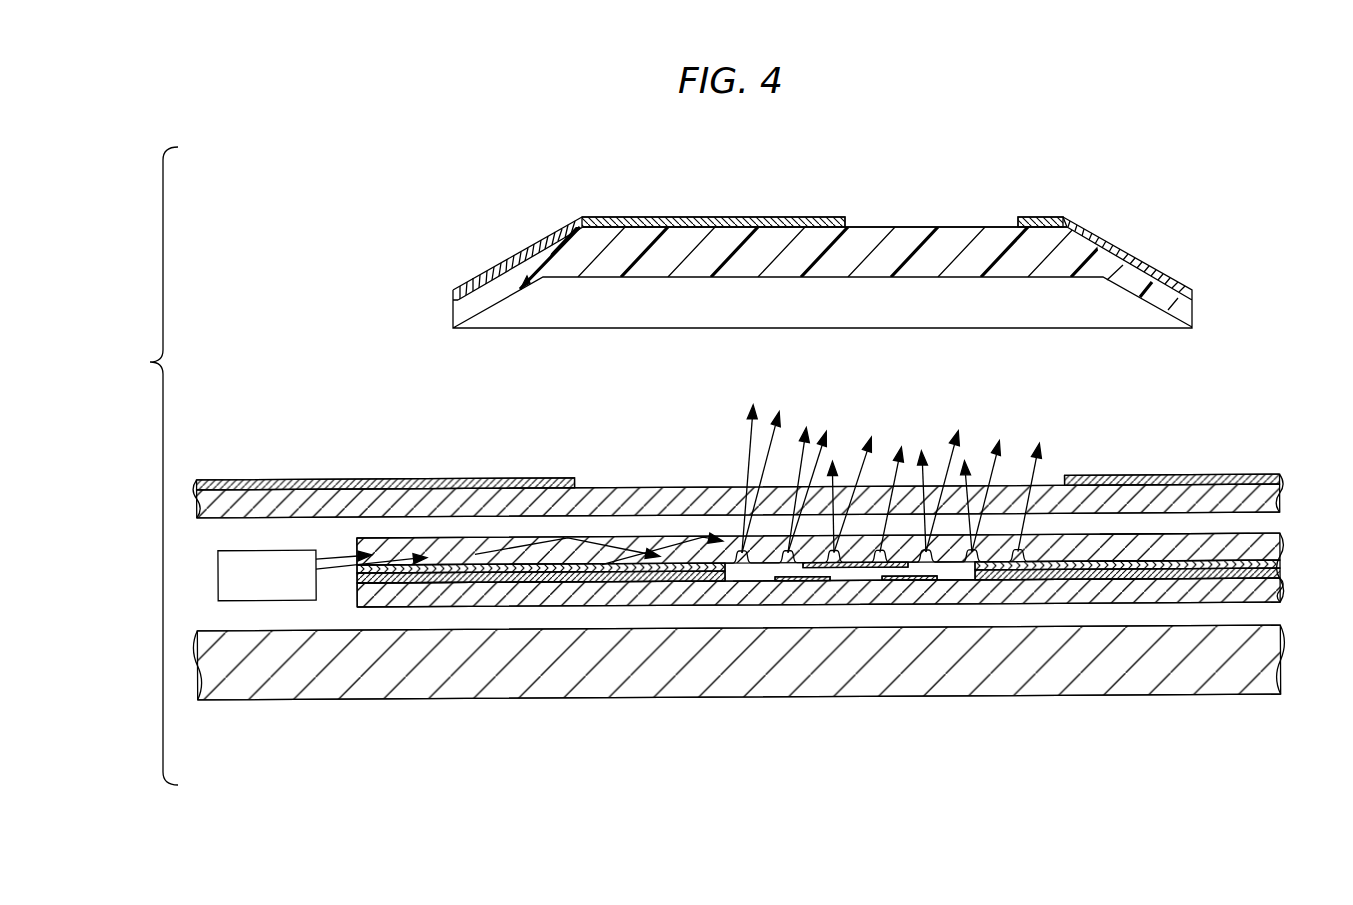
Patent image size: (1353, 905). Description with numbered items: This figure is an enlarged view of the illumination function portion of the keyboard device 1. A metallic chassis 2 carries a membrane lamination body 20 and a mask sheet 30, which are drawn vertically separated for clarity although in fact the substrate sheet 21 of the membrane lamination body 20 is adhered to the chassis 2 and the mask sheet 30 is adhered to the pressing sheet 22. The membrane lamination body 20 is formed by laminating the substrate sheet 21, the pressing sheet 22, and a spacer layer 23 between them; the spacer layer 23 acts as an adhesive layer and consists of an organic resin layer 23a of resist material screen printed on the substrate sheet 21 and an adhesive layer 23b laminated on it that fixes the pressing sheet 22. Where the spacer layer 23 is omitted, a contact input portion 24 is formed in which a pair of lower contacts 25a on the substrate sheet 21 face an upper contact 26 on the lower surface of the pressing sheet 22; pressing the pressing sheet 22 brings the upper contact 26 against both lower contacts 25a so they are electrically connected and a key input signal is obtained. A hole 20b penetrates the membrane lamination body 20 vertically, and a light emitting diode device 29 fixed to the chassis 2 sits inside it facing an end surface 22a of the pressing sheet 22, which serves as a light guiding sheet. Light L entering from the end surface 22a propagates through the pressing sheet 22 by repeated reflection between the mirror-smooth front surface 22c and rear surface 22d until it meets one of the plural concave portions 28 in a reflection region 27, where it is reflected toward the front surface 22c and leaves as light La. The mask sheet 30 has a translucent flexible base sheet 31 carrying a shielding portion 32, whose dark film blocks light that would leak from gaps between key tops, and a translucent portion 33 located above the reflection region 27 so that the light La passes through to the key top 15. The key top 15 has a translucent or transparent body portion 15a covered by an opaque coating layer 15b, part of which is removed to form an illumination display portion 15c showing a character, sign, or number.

The keyboard device 1 is at (1243, 292).
The chassis 2 is at (437, 683).
The key top 15 is at (652, 268).
The body portion 15a is at (970, 258).
The coating layer 15b is at (730, 216).
The illumination display portion 15c is at (918, 213).
The membrane lamination body 20 is at (1285, 536).
The hole 20b is at (353, 600).
The substrate sheet 21 is at (1243, 600).
The pressing sheet 22 is at (1250, 536).
The end surface 22a is at (357, 548).
The front surface 22c is at (1170, 535).
The rear surface 22d is at (1188, 565).
The spacer layer 23 is at (1150, 743).
The organic resin layer 23a is at (1143, 573).
The adhesive layer 23b is at (1102, 565).
The contact input portion 24 is at (963, 570).
The lower contacts 25a is at (775, 574).
The upper contact 26 is at (837, 567).
The reflection region 27 is at (872, 598).
The concave portions 28 is at (737, 548).
The light emitting diode device 29 is at (268, 588).
The mask sheet 30 is at (1285, 477).
The base sheet 31 is at (1225, 477).
The shielding portion 32 is at (510, 477).
The translucent portion 33 is at (645, 487).
The light L is at (427, 556).
The emitted light La is at (1062, 400).